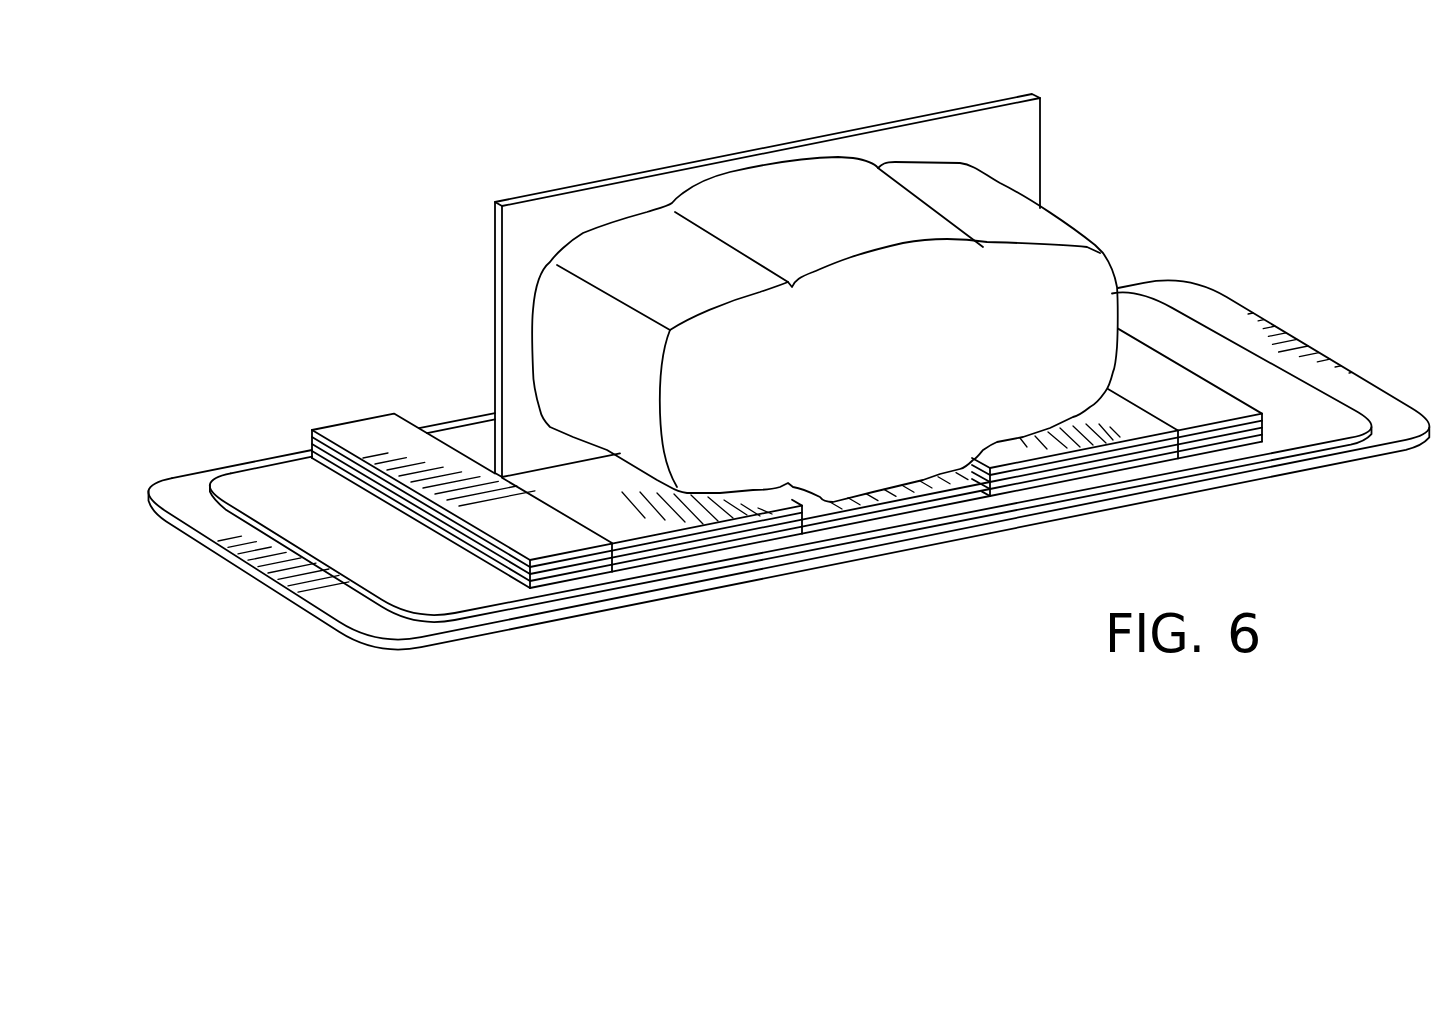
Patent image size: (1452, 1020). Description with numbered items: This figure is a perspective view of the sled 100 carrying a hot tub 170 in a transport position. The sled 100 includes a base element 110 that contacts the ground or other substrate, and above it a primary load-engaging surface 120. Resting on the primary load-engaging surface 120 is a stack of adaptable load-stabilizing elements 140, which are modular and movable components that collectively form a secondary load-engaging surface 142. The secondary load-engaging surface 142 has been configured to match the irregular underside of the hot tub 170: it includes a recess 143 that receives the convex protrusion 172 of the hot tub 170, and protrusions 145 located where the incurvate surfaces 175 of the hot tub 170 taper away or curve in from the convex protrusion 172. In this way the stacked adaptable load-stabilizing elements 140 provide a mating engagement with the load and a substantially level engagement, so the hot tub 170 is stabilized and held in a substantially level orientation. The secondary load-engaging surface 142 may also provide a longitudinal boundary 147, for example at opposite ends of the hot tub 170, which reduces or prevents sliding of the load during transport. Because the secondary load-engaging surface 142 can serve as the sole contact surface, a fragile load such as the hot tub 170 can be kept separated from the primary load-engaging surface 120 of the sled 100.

The sled 100 is at (300, 145).
The base element 110 is at (284, 588).
The primary load-engaging surface 120 is at (687, 572).
The adaptable load-stabilizing elements 140 is at (772, 494).
The secondary load-engaging surface 142 is at (373, 435).
The longitudinal boundary 147 is at (600, 494).
The incurvate surfaces 175 is at (790, 496).
The convex protrusion 172 is at (877, 497).
The recess 143 is at (958, 488).
The protrusions 145 is at (1130, 420).
The hot tub 170 is at (901, 363).